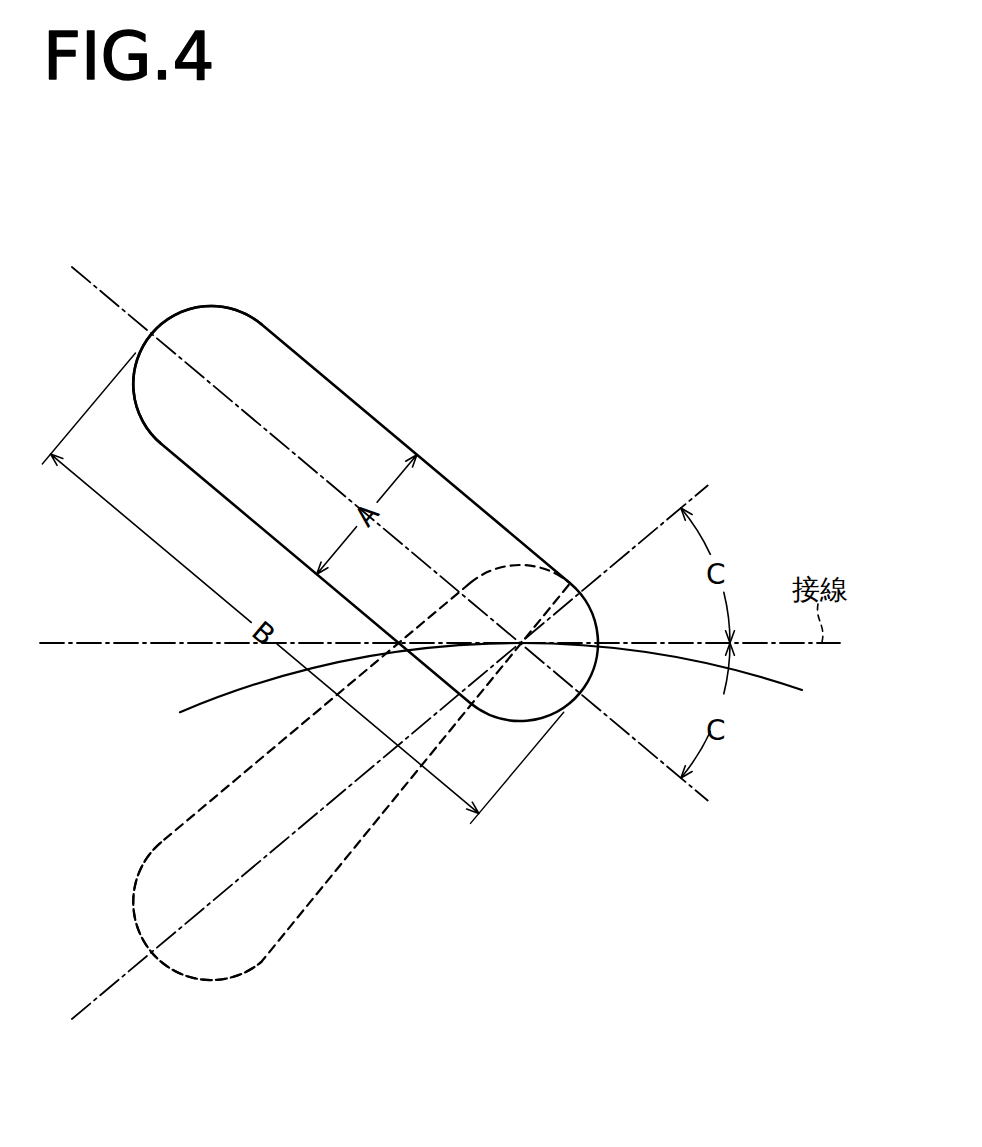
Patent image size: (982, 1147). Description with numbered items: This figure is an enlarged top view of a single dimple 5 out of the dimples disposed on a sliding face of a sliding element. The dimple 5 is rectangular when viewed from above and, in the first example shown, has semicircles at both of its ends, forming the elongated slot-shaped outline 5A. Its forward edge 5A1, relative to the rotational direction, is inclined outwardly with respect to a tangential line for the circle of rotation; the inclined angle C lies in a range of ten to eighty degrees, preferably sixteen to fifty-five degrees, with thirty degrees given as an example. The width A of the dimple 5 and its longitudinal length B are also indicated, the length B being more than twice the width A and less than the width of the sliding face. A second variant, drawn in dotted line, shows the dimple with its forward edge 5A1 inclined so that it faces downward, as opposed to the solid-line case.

The dimple 5 is at (568, 552).
The dimple 5A is at (454, 490).
The forward edge 5A1 is at (171, 326).